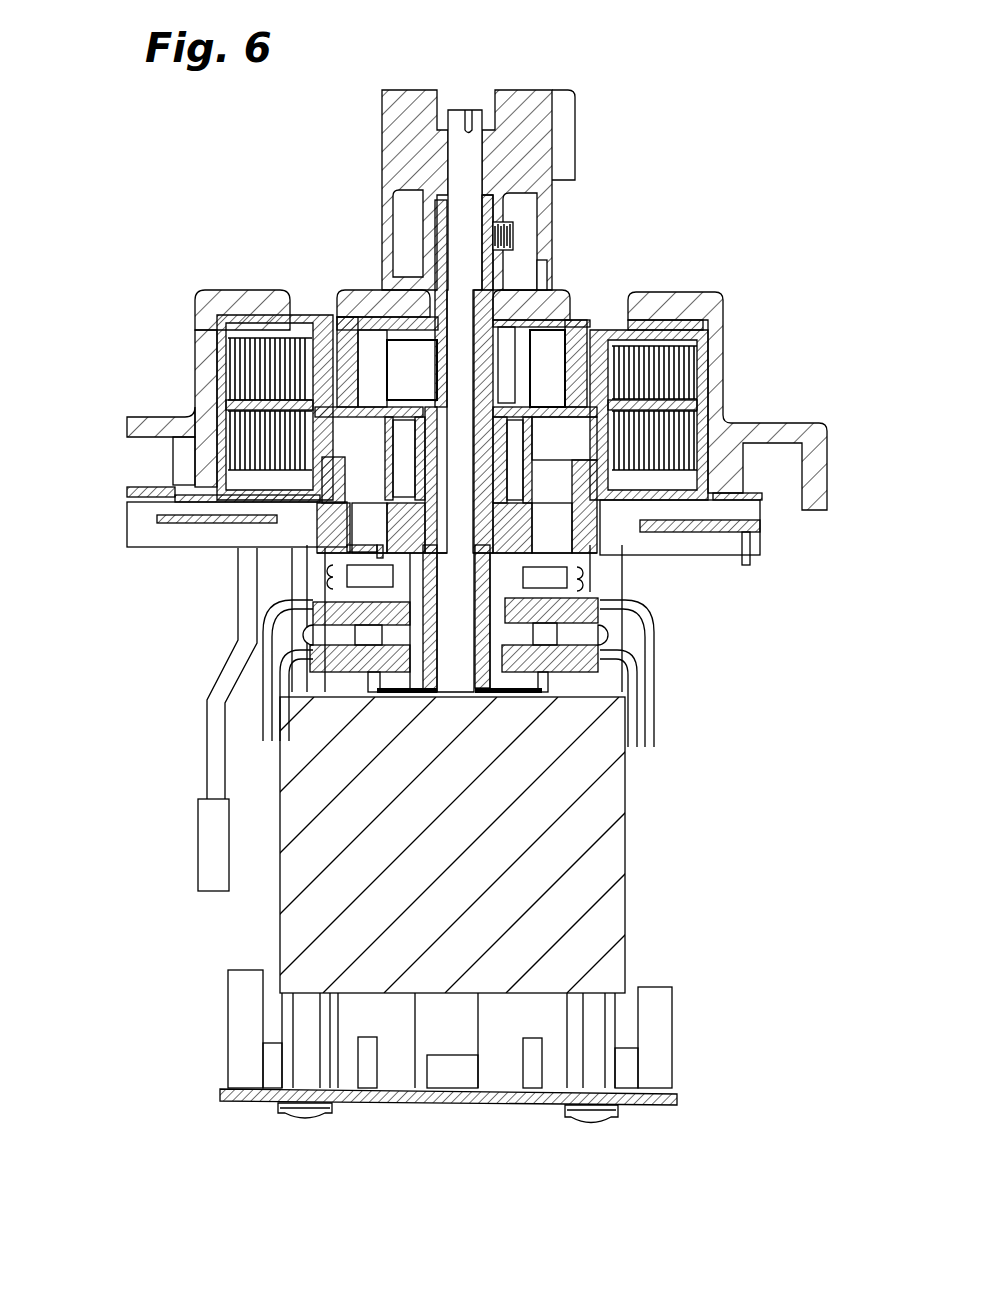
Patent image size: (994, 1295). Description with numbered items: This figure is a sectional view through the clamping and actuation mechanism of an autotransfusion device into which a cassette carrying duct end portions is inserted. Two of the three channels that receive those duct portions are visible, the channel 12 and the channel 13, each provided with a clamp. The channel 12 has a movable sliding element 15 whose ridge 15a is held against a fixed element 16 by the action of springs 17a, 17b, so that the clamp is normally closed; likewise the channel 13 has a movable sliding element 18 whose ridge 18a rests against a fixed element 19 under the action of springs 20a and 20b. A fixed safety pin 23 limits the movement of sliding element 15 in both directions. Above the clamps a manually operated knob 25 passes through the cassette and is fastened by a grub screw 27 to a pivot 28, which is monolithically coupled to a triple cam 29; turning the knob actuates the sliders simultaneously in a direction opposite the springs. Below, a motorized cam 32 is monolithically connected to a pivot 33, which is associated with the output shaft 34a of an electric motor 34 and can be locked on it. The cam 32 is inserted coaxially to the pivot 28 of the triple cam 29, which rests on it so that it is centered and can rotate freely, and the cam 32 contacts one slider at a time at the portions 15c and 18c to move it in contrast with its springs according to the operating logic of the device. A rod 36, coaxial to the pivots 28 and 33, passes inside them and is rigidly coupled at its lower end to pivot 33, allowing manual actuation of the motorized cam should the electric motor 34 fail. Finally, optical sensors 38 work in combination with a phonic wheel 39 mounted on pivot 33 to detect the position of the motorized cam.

The channel 12 is at (607, 323).
The channel 13 is at (318, 312).
The movable sliding element 15 is at (618, 335).
The ridge 15a is at (640, 378).
The sliding element portion 15c is at (645, 430).
The fixed element 16 is at (590, 318).
The spring 17a is at (646, 363).
The spring 17b is at (677, 513).
The movable sliding element 18 is at (302, 328).
The ridge 18a is at (230, 336).
The sliding element portion 18c is at (232, 516).
The fixed element 19 is at (337, 318).
The spring 20a is at (267, 340).
The spring 20b is at (160, 488).
The fixed safety pin 23 is at (600, 533).
The knob 25 is at (433, 213).
The grub screw 27 is at (503, 217).
The pivot 28 is at (402, 190).
The triple cam 29 is at (383, 387).
The motorized cam 32 is at (430, 445).
The pivot 33 is at (345, 688).
The electric motor 34 is at (611, 918).
The output shaft 34a is at (450, 700).
The rod 36 is at (467, 140).
The optical sensors 38 is at (330, 600).
The phonic wheel 39 is at (500, 632).